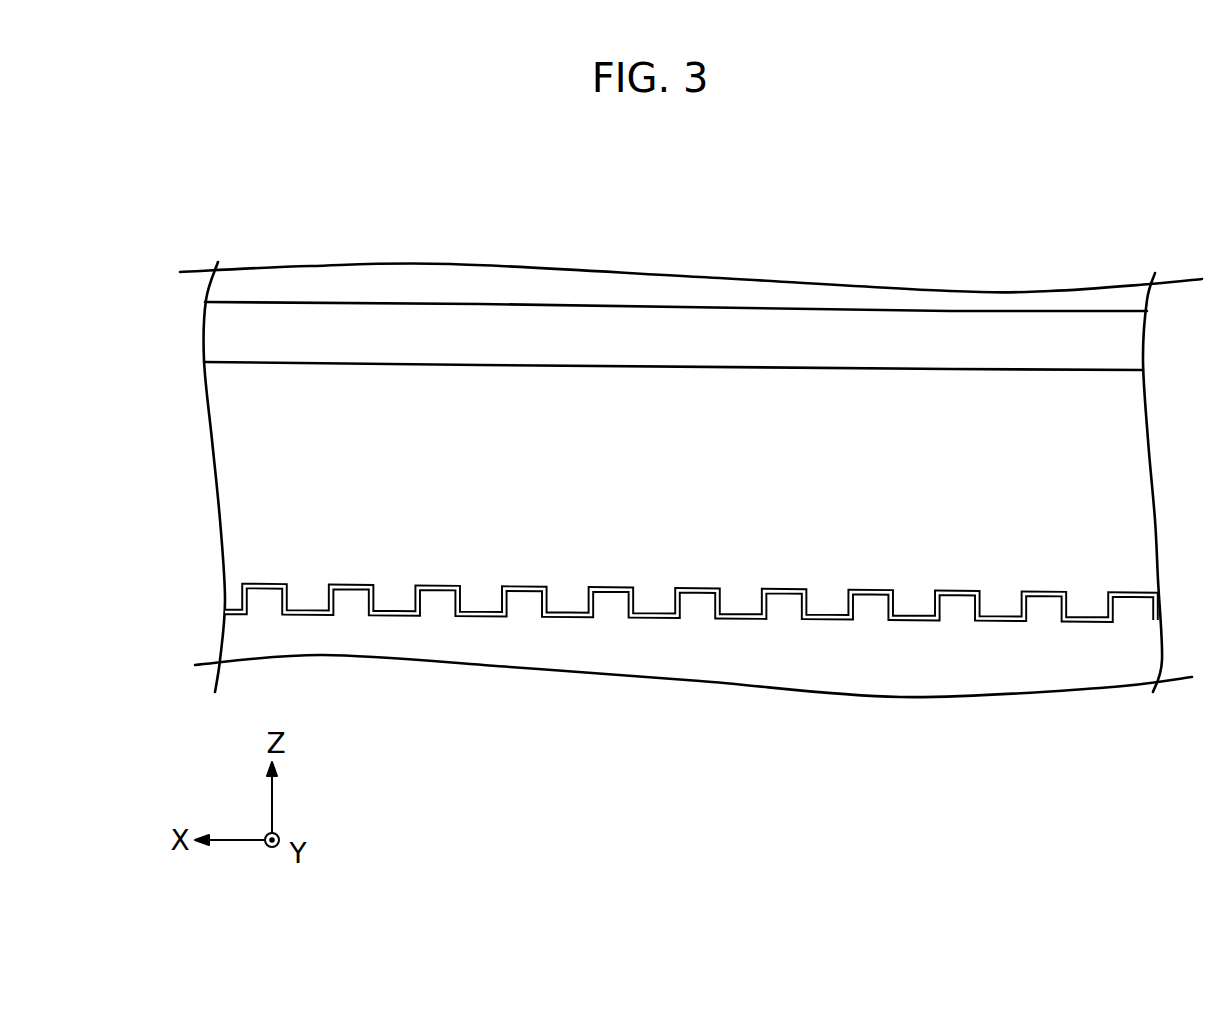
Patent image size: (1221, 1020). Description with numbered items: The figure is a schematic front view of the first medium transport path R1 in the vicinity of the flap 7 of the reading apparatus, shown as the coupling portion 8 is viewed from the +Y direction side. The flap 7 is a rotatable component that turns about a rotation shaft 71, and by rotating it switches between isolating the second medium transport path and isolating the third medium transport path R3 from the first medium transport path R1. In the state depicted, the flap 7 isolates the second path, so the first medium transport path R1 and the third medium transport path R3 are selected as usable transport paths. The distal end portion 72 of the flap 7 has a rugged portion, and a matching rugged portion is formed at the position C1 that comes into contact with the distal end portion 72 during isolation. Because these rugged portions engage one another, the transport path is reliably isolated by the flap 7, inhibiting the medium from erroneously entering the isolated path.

The flap 7 is at (680, 383).
The rotation shaft 71 is at (588, 344).
The distal end portion 72 is at (482, 592).
The coupling portion 8 is at (1035, 218).
The first medium transport path R1 is at (702, 653).
The third medium transport path R3 is at (717, 293).
The position C1 is at (830, 617).